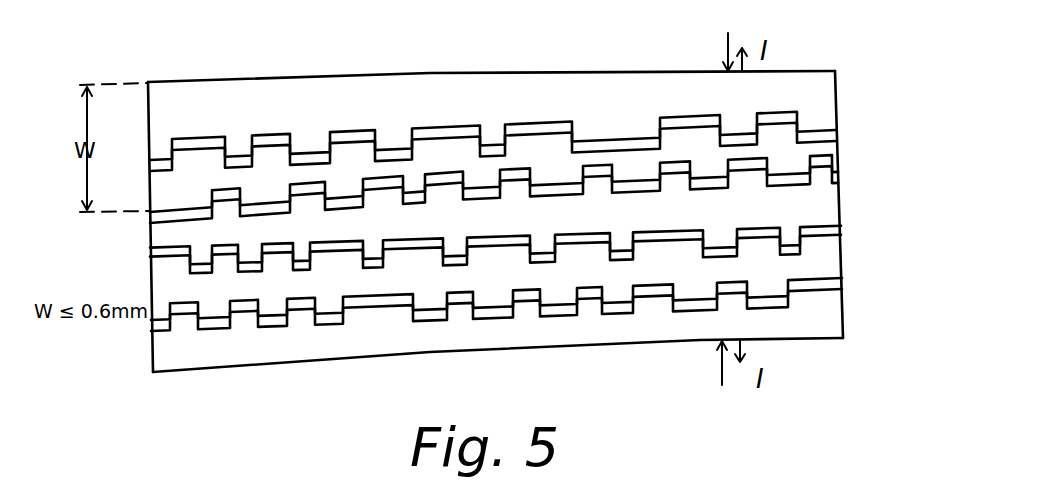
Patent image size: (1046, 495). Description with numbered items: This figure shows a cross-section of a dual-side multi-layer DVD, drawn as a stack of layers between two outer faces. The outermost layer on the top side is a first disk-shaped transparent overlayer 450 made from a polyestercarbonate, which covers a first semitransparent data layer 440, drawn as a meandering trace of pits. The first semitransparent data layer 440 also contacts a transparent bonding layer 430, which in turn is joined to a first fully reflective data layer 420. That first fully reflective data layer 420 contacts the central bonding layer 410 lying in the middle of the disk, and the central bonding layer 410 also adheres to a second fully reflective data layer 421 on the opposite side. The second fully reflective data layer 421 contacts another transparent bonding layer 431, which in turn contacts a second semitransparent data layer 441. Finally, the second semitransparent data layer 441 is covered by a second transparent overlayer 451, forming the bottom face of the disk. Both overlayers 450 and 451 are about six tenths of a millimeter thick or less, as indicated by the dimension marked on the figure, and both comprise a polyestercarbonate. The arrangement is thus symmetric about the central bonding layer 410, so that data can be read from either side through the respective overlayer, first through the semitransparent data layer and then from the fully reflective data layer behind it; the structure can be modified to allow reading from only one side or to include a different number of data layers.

The first transparent overlayer 450 is at (825, 88).
The first semitransparent data layer 440 is at (835, 130).
The transparent bonding layer 430 is at (835, 155).
The first fully reflective data layer 420 is at (839, 177).
The central bonding layer 410 is at (839, 203).
The second fully reflective data layer 421 is at (840, 232).
The transparent bonding layer 431 is at (840, 262).
The second semitransparent data layer 441 is at (840, 288).
The second transparent overlayer 451 is at (836, 320).